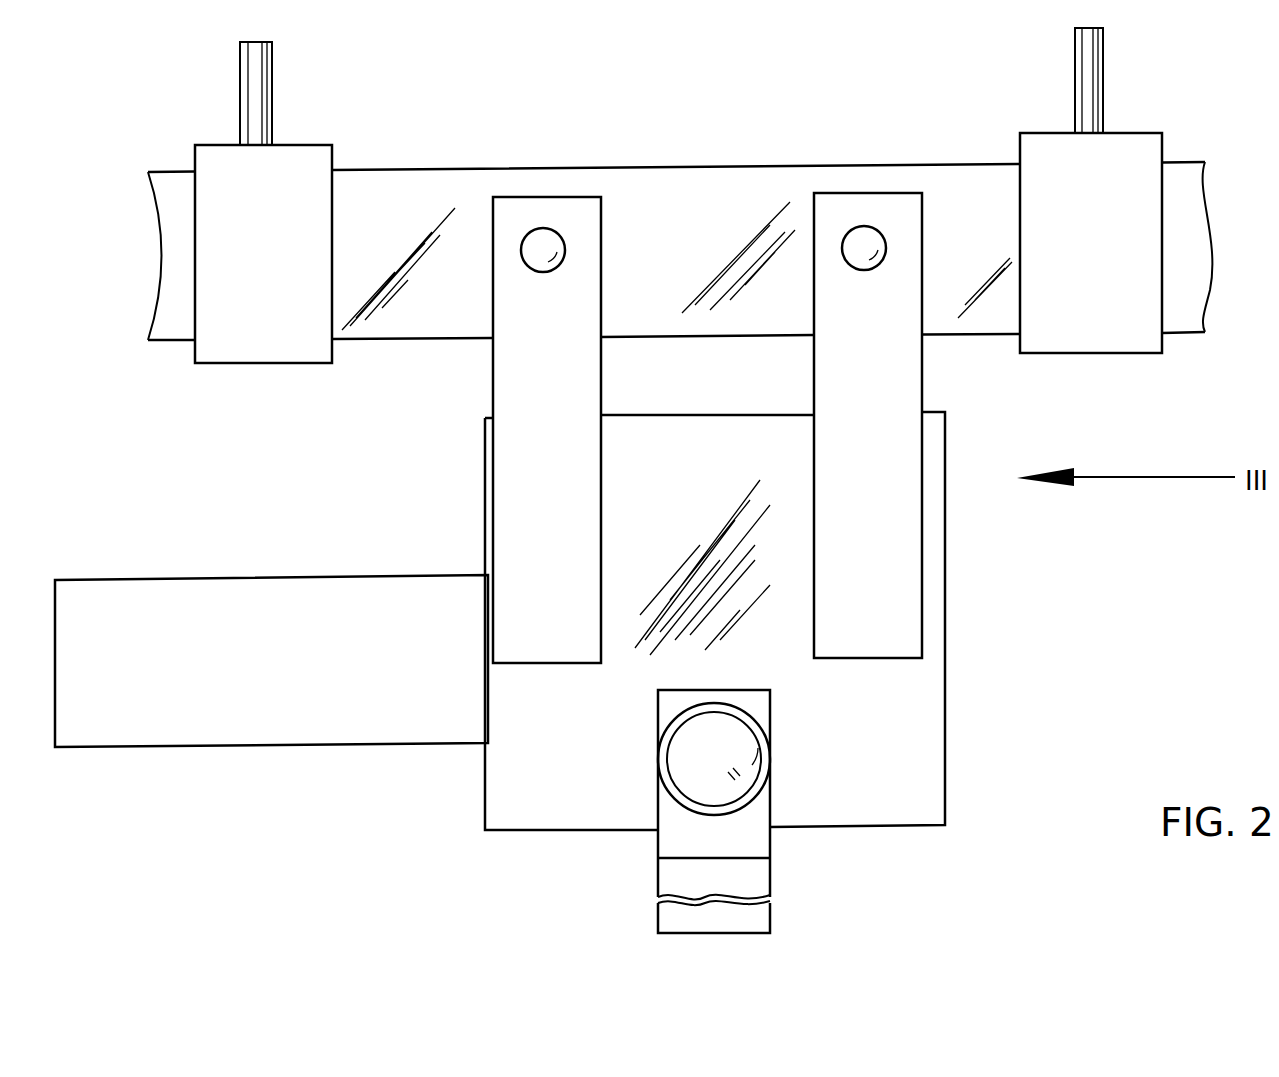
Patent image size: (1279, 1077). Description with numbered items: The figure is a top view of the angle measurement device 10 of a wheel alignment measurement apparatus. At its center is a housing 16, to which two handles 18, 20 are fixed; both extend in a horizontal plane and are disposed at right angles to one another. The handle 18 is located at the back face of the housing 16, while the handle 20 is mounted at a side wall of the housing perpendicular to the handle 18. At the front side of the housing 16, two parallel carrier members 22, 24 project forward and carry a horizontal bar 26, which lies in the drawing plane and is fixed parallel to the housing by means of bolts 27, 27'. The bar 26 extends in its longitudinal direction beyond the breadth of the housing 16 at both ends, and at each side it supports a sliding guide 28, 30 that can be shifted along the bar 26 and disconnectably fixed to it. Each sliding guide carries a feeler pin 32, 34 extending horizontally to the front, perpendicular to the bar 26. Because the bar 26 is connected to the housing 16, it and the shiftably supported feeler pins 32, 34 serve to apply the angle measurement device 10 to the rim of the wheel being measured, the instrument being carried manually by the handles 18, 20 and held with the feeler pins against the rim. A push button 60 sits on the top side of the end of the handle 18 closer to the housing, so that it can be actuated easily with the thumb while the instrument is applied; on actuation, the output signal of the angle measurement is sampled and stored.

The angle measurement device 10 is at (450, 768).
The housing 16 is at (902, 699).
The handle 18 is at (703, 878).
The handle 20 is at (178, 703).
The carrier member 22 is at (890, 388).
The carrier member 24 is at (525, 380).
The bar 26 is at (450, 187).
The bolt 27 is at (593, 163).
The bolt 27' is at (805, 162).
The sliding guide 28 is at (1123, 322).
The sliding guide 30 is at (273, 320).
The feeler pin 32 is at (1088, 75).
The feeler pin 34 is at (273, 90).
The push button 60 is at (730, 773).